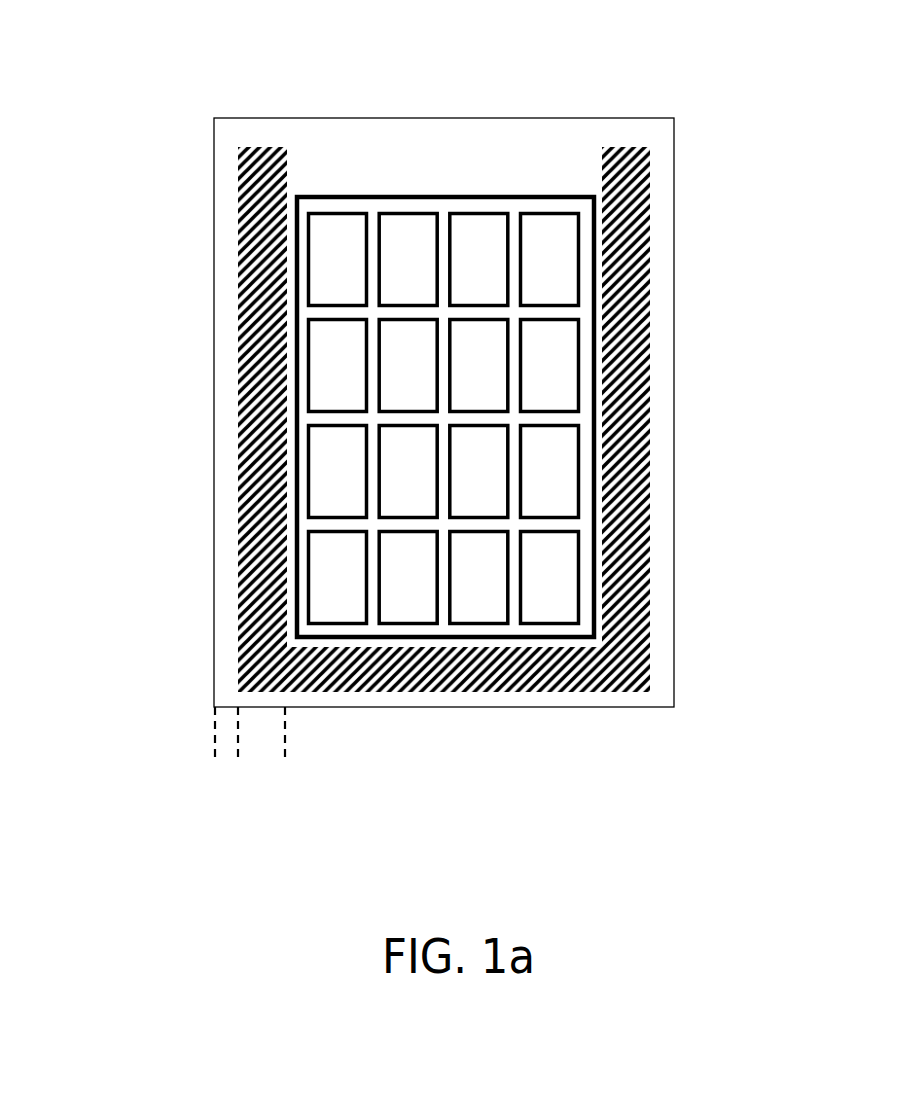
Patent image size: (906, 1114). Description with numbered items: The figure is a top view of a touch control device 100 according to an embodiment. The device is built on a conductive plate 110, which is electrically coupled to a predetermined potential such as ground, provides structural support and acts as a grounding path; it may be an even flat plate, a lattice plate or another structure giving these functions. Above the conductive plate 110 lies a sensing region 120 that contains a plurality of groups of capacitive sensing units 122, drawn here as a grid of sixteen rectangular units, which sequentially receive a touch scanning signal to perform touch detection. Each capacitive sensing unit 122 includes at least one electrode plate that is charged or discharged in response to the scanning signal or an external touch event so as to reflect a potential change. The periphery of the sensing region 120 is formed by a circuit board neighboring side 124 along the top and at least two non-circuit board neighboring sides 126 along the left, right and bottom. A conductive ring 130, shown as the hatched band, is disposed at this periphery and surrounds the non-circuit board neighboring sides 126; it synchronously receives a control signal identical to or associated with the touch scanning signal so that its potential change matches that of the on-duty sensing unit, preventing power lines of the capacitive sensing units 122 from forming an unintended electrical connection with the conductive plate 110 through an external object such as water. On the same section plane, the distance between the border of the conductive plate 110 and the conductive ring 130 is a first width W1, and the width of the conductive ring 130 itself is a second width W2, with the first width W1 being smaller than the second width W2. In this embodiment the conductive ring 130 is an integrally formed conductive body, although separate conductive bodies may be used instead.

The touch control device 100 is at (97, 897).
The conductive plate 110 is at (253, 128).
The sensing region 120 is at (362, 322).
The capacitive sensing unit 122 is at (322, 258).
The circuit board neighboring side 124 is at (407, 195).
The non-circuit board neighboring side 126 is at (295, 375).
The conductive ring 130 is at (262, 166).
The first width W1 is at (222, 766).
The second width W2 is at (267, 766).